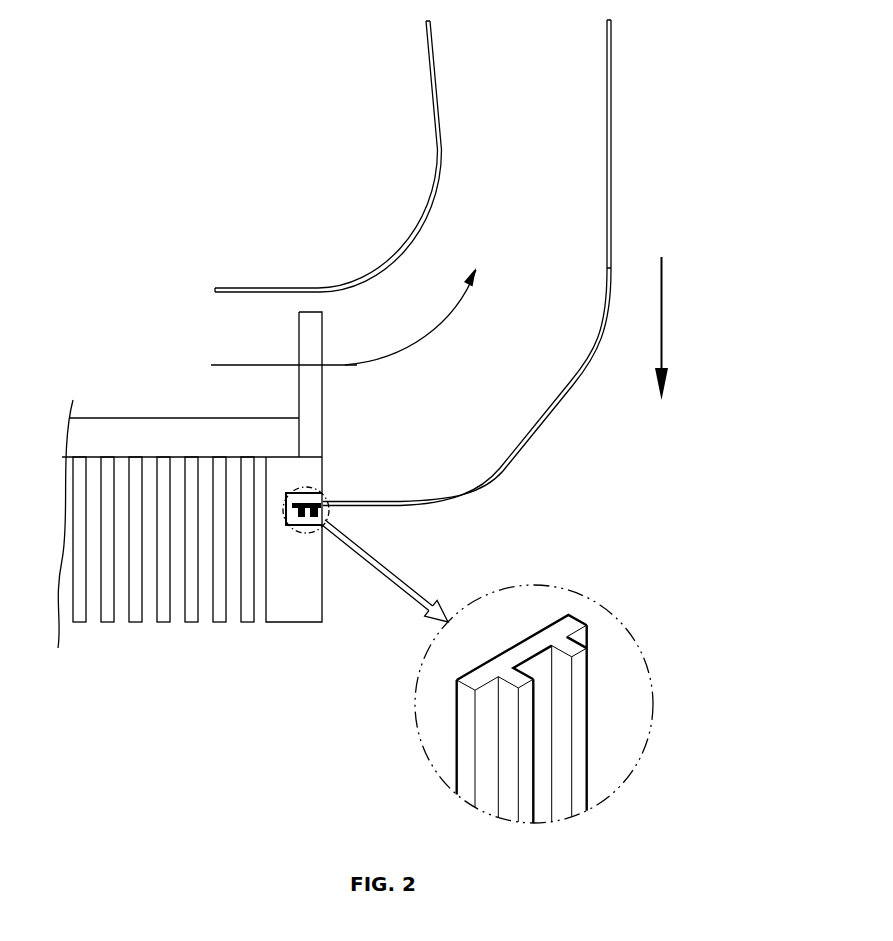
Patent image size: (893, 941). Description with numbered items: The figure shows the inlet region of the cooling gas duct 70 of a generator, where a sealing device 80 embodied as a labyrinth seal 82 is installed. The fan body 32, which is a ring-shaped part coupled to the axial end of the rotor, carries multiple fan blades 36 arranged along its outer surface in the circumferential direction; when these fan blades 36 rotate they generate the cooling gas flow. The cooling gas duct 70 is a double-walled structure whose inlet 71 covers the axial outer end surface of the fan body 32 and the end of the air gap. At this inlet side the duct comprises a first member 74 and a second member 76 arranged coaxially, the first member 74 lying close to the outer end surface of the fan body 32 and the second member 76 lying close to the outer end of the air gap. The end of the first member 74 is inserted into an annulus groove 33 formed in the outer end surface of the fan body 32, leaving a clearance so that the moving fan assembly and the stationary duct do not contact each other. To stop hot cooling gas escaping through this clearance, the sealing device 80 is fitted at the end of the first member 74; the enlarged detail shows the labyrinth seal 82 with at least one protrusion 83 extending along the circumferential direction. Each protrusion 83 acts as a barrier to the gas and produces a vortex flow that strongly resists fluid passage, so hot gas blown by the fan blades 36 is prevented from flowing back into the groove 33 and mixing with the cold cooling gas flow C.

The cooling gas duct 70 is at (476, 263).
The second member 76 is at (437, 78).
The first member 74 is at (690, 50).
The inlet 71 is at (430, 387).
The fan blades 36 is at (310, 339).
The annulus groove 33 is at (288, 488).
The fan body 32 is at (300, 605).
The sealing device 80 is at (306, 510).
The labyrinth seal 82 is at (492, 663).
The protrusion 83 is at (582, 720).
The C flow C is at (663, 312).